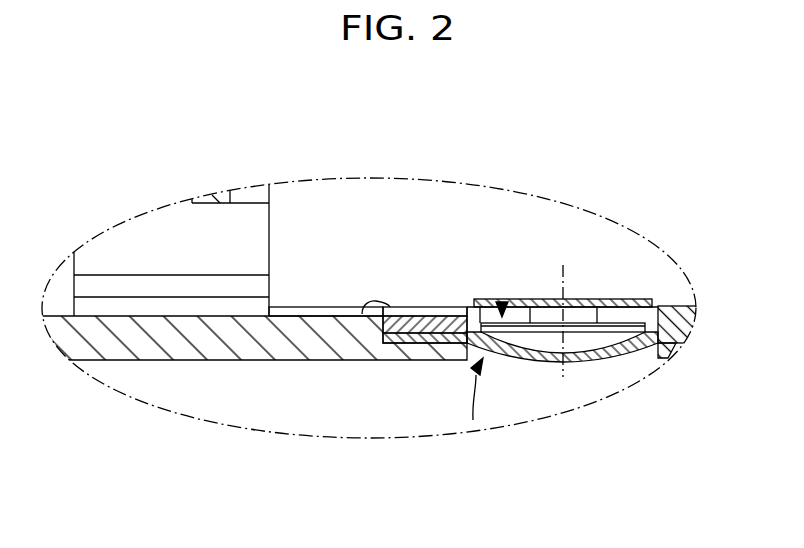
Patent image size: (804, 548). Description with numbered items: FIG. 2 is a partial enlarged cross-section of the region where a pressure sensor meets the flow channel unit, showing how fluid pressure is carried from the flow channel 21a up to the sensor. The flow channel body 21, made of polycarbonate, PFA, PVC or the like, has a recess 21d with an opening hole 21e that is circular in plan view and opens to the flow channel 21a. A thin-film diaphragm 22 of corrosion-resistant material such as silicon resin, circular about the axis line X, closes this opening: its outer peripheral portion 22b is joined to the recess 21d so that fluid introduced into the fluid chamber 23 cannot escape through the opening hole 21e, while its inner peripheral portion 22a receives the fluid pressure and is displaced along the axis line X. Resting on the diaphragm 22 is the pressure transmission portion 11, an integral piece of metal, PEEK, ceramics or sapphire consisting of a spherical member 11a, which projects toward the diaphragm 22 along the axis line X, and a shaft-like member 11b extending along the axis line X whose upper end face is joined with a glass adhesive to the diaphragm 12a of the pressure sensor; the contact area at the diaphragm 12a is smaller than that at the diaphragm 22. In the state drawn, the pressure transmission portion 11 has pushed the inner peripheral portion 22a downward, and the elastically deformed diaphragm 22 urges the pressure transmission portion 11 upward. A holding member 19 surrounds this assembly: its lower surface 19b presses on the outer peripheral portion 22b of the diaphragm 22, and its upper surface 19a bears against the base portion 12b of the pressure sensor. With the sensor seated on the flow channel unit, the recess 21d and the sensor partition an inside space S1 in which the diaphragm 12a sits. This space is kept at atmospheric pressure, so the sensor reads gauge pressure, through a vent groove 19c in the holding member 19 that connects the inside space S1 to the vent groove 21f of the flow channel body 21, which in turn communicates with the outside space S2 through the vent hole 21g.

The pressure transmission portion 11 is at (632, 327).
The spherical member 11a is at (541, 345).
The shaft-like member 11b is at (586, 318).
The diaphragm 12a is at (620, 300).
The base portion 12b is at (367, 197).
The holding member 19 is at (405, 320).
The other surface 19a is at (428, 310).
The one surface 19b is at (408, 345).
The vent groove 19c is at (362, 314).
The flow channel body 21 is at (133, 360).
The flow channel 21a is at (259, 393).
The recess 21d is at (502, 302).
The opening hole 21e is at (470, 378).
The vent groove 21f is at (305, 308).
The vent hole 21g is at (173, 313).
The diaphragm 22 is at (662, 357).
The inner peripheral portion 22a is at (535, 308).
The outer peripheral portion 22b is at (472, 303).
The fluid chamber 23 is at (497, 400).
The inside space S1 is at (648, 315).
The outside space S2 is at (55, 297).
The axis line X is at (577, 361).